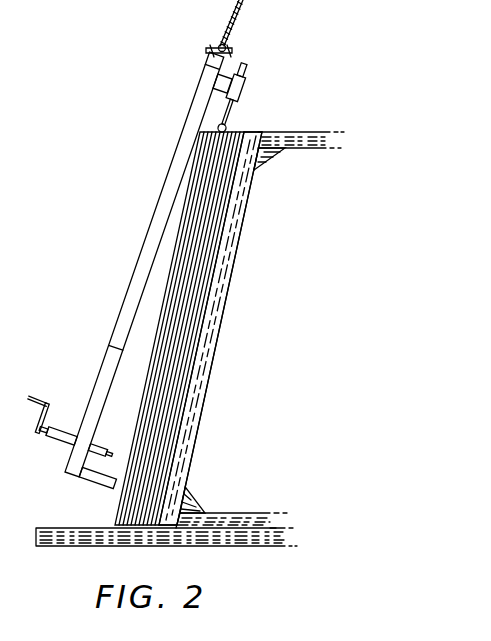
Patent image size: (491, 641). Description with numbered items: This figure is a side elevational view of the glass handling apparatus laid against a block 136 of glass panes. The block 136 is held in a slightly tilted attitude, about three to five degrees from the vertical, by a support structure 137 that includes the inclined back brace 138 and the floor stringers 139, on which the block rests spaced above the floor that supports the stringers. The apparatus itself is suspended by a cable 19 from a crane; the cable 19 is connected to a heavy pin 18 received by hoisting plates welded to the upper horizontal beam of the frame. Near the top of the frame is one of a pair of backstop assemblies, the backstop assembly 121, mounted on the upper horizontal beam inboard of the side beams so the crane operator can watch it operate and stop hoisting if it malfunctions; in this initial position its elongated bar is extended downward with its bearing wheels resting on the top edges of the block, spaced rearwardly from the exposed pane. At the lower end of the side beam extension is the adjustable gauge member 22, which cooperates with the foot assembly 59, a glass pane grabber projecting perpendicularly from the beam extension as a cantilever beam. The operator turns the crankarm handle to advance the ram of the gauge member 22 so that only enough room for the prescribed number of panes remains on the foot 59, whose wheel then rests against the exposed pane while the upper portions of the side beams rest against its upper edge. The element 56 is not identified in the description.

The heavy pin 18 is at (230, 53).
The cable 19 is at (230, 13).
The adjustable gauge member 22 is at (69, 425).
The cable 56 is at (7, 86).
The foot assembly 59 is at (90, 492).
The backstop assembly 121 is at (248, 90).
The block of glass panes 136 is at (263, 125).
The support structure 137 is at (233, 288).
The inclined back brace 138 is at (196, 424).
The floor stringers 139 is at (92, 541).